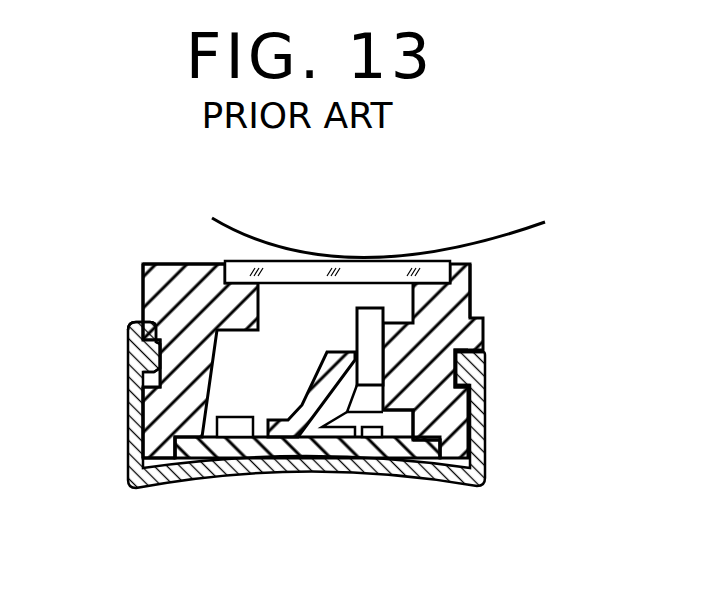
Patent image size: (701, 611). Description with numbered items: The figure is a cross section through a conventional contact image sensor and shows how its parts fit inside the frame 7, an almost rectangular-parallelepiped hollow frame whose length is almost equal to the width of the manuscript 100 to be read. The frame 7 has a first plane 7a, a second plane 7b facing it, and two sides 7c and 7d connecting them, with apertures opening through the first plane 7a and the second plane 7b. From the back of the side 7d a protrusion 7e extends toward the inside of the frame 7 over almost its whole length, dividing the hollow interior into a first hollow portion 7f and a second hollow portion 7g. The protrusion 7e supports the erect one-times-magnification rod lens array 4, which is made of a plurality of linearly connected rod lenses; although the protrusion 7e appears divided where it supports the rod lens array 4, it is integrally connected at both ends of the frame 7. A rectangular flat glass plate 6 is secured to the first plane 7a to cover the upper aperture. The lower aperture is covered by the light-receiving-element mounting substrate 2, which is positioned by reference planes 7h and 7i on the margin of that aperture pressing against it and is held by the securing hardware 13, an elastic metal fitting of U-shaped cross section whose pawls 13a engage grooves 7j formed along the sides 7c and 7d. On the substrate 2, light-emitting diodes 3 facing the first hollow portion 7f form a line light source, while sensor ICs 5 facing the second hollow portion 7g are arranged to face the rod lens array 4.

The light-receiving-element mounting substrate 2 is at (266, 450).
The light-emitting diode 3 is at (233, 432).
The rod lens array 4 is at (370, 317).
The sensor IC 5 is at (370, 438).
The glass plate 6 is at (297, 270).
The frame 7 is at (166, 261).
The first plane 7a is at (203, 262).
The second plane 7b is at (160, 484).
The side 7c is at (143, 280).
The side 7d is at (472, 277).
The protrusion 7e is at (303, 403).
The first hollow portion 7f is at (140, 408).
The second hollow portion 7g is at (397, 442).
The reference plane 7h is at (186, 460).
The reference plane 7i is at (423, 447).
The groove 7j is at (140, 372).
The securing hardware 13 is at (484, 478).
The pawl 13a is at (136, 340).
The manuscript 100 is at (497, 237).